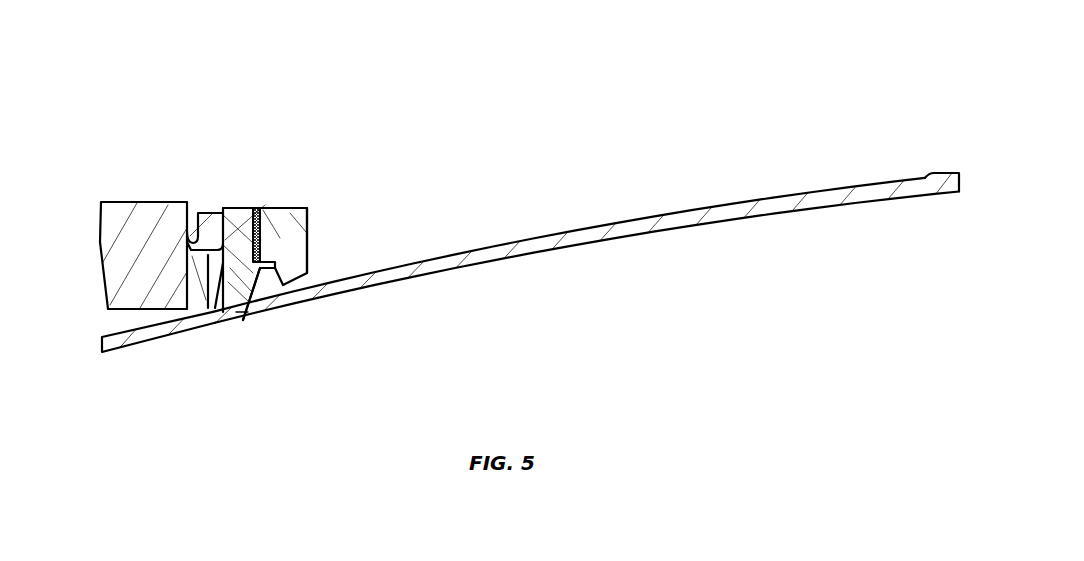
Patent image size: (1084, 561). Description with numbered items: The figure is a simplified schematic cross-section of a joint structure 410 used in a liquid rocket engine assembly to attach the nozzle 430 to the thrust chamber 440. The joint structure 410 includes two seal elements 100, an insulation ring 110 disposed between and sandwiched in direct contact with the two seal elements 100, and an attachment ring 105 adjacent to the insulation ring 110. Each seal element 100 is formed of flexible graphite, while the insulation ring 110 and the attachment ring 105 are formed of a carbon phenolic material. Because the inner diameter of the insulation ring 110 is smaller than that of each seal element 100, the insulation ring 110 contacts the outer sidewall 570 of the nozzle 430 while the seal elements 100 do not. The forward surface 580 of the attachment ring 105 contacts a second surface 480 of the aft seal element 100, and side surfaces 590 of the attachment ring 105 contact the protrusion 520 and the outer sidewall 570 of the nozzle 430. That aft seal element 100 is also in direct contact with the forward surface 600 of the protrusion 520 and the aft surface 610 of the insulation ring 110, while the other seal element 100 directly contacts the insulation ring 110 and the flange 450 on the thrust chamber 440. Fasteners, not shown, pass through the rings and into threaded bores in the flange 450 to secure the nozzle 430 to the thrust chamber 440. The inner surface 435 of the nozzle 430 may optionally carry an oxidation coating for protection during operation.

The seal element 100 is at (217, 202).
The attachment ring 105 is at (312, 240).
The insulation ring 110 is at (231, 303).
The joint structure 410 is at (273, 194).
The nozzle 430 is at (548, 238).
The inner surface 435 is at (596, 242).
The thrust chamber 440 is at (118, 343).
The flange 450 is at (133, 222).
The second surface 480 is at (249, 205).
The protrusion 520 is at (267, 287).
The outer sidewall 570 is at (791, 193).
The forward surface 580 is at (262, 233).
The side surfaces 590 is at (277, 252).
The forward surface 600 is at (247, 302).
The aft surface 610 is at (238, 308).